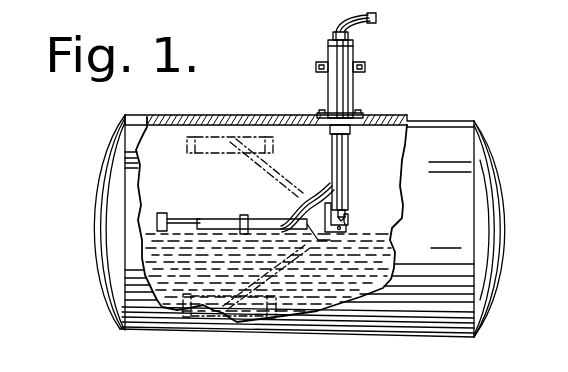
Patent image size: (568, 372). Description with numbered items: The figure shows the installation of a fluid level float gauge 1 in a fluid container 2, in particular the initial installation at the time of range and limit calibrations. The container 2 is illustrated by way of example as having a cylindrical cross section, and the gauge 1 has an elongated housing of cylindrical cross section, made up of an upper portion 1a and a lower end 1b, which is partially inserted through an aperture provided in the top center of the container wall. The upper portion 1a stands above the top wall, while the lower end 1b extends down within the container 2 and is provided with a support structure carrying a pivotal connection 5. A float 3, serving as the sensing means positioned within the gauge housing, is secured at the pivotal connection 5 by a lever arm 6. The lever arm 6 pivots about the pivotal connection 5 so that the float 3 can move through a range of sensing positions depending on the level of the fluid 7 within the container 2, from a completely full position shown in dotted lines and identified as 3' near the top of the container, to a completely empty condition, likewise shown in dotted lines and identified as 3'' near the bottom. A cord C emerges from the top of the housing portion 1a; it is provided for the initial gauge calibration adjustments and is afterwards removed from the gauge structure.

The fluid level float gauge 1 is at (318, 50).
The upper portion of elongated housing 1a is at (348, 90).
The lower end of gauge housing 1b is at (348, 157).
The cord C is at (363, 22).
The fluid container 2 is at (440, 130).
The float 3 is at (178, 212).
The float full position 3' is at (227, 167).
The float empty position 3'' is at (246, 305).
The pivotal connection 5 is at (348, 207).
The lever arm 6 is at (260, 221).
The fluid 7 is at (375, 248).